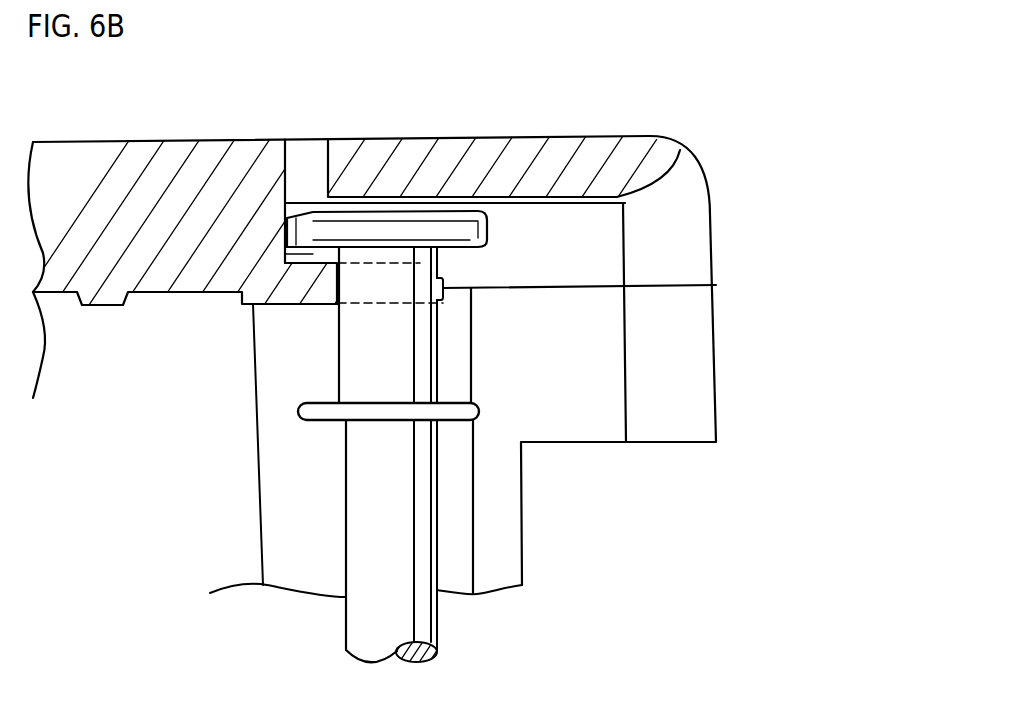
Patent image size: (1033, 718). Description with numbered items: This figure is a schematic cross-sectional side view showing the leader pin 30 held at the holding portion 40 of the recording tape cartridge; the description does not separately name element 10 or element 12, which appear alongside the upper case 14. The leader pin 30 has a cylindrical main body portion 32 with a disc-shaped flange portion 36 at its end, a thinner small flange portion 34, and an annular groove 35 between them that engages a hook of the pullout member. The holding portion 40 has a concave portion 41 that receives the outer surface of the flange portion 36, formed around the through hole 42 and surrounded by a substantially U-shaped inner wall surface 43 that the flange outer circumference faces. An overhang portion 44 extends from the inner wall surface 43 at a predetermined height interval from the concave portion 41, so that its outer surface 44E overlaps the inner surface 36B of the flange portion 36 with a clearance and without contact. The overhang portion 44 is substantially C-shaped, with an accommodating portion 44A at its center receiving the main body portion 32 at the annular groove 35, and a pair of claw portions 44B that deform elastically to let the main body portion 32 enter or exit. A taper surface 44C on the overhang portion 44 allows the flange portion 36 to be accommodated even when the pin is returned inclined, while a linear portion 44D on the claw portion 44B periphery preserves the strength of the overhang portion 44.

The connector assembly 10 is at (131, 114).
The base plate 12 is at (219, 131).
The upper case 14 is at (432, 140).
The leader pin 30 is at (439, 622).
The cylindrical main body portion 32 is at (423, 510).
The small flange portion 34 is at (479, 410).
The annular groove 35 is at (439, 349).
The flange portion 36 is at (488, 227).
The inner surface of the flange portion 36B is at (455, 247).
The holding portion 40 is at (647, 207).
The concave portion 41 is at (546, 210).
The through hole 42 is at (326, 165).
The inner wall surface 43 is at (294, 265).
The overhang portion 44 is at (310, 314).
The accommodating portion 44A is at (382, 307).
The claw portion 44B is at (443, 303).
The taper surface 44C is at (436, 279).
The linear portion 44D is at (443, 292).
The outer surface of the overhang portion 44E is at (313, 248).